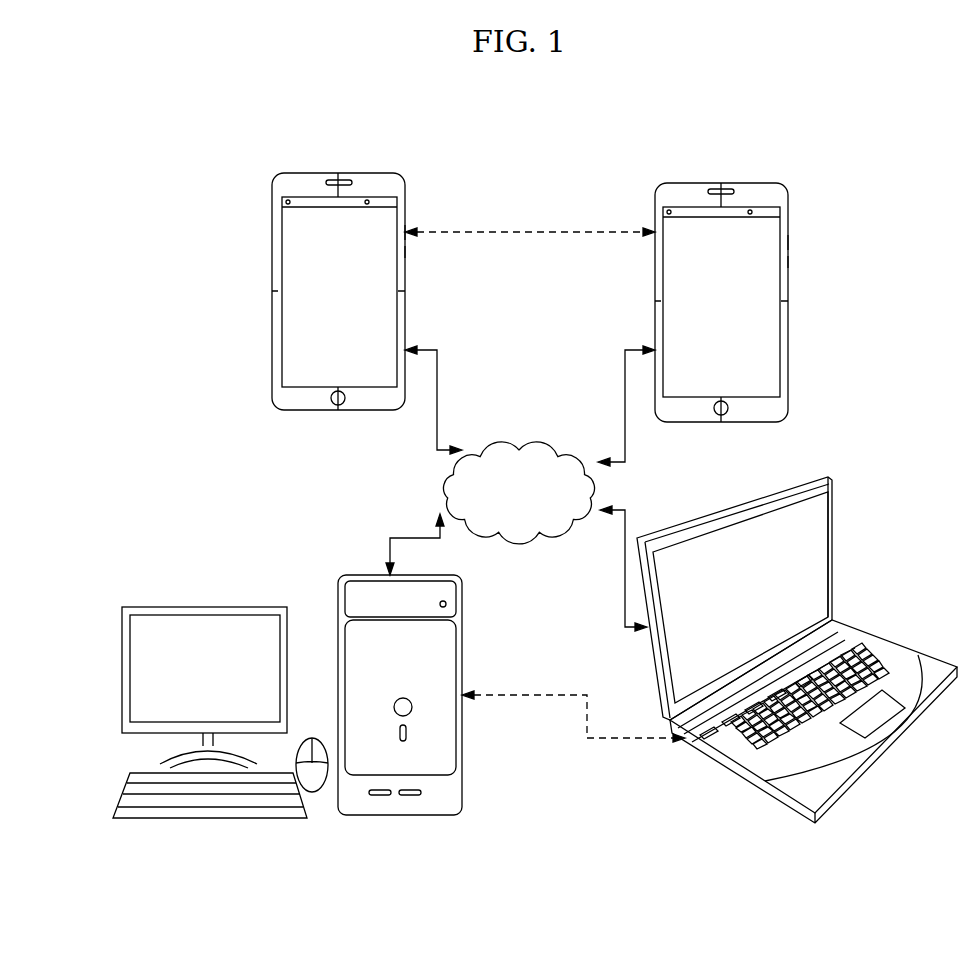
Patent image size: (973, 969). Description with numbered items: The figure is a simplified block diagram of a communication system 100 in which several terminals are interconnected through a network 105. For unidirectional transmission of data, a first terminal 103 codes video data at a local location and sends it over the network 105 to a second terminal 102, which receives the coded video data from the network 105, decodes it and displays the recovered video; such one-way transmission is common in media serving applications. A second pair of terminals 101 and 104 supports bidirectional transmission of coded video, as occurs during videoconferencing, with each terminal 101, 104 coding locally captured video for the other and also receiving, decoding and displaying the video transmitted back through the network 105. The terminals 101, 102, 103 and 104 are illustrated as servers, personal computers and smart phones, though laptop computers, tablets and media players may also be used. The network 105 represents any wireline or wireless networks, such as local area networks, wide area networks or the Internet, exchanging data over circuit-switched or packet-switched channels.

The communication system 100 is at (141, 147).
The terminal 101 is at (268, 278).
The second terminal 102 is at (462, 782).
The first terminal 103 is at (648, 651).
The terminal 104 is at (650, 273).
The network 105 is at (525, 437).